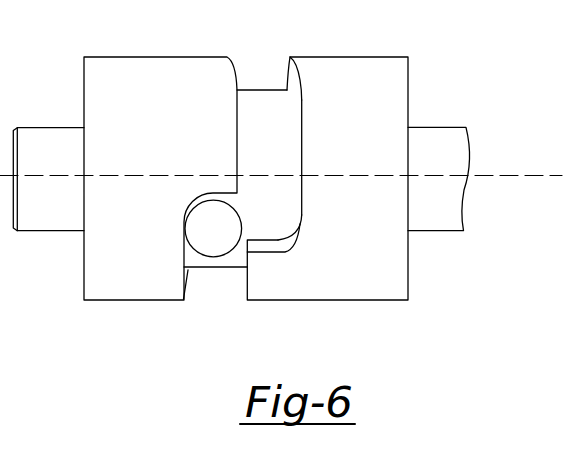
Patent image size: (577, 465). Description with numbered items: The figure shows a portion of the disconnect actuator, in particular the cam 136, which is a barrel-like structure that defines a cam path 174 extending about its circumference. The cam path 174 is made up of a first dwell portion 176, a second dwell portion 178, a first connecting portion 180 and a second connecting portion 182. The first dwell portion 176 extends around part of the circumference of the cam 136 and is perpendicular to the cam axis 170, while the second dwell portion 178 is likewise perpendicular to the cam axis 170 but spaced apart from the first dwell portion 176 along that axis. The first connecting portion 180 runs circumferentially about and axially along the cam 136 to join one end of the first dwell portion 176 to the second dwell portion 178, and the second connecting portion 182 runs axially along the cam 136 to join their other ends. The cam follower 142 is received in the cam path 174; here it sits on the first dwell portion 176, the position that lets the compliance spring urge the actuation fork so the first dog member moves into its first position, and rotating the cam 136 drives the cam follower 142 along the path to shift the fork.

The cam 136 is at (122, 272).
The cam follower 142 is at (213, 237).
The cam axis 170 is at (515, 173).
The cam path 174 is at (258, 107).
The first dwell portion 176 is at (183, 253).
The second dwell portion 178 is at (272, 165).
The first connecting portion 180 is at (293, 75).
The second connecting portion 182 is at (278, 232).